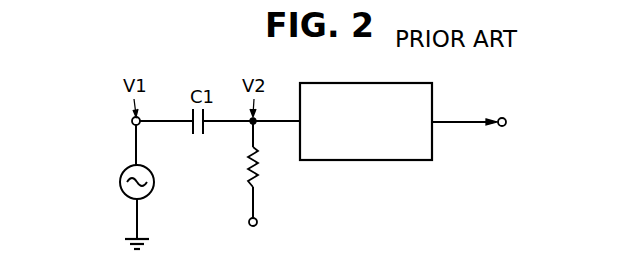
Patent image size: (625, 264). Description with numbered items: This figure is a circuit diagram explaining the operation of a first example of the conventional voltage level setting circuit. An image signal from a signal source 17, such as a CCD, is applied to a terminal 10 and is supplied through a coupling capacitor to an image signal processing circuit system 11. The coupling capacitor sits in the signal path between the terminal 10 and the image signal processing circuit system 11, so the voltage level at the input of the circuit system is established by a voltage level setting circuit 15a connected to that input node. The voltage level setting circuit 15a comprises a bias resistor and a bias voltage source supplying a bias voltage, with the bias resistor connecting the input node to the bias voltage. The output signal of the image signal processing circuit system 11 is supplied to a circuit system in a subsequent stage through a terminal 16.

The terminal 10 is at (131, 118).
The image signal processing circuit system 11 is at (347, 83).
The voltage level setting circuit 15a is at (264, 186).
The terminal 16 is at (504, 118).
The signal source 17 is at (120, 178).